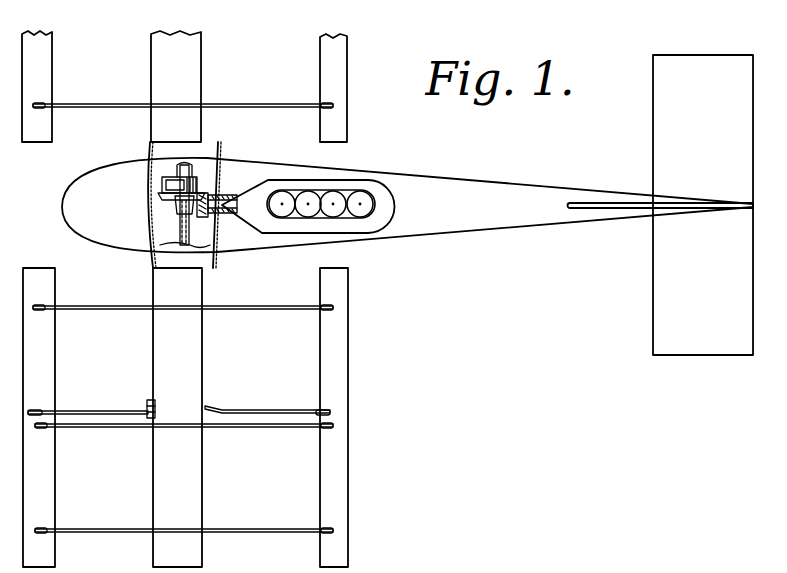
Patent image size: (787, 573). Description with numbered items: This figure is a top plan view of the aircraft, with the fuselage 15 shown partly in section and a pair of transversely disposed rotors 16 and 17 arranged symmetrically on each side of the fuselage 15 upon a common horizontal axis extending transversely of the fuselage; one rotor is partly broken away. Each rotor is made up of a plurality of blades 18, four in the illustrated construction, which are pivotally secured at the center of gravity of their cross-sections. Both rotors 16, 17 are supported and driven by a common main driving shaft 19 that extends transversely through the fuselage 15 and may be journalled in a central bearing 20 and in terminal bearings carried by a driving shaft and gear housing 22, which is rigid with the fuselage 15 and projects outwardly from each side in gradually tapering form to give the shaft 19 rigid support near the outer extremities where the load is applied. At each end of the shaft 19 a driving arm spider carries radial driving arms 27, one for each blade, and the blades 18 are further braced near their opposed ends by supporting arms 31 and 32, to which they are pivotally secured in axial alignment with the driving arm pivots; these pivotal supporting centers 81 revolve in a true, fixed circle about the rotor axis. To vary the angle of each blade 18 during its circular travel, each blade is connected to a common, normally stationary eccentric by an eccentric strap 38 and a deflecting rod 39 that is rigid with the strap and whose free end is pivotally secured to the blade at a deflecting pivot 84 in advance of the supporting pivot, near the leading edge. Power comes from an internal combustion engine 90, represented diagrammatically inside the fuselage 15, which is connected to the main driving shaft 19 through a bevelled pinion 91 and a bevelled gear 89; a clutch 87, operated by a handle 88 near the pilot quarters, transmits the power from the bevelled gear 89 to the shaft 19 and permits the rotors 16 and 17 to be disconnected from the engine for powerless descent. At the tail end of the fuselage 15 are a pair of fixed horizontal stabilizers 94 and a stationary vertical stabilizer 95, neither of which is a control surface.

The fuselage 15 is at (407, 205).
The rotor 16 is at (183, 68).
The rotor 17 is at (298, 405).
The blades 18 is at (38, 74).
The main driving shaft 19 is at (188, 163).
The central bearing 20 is at (180, 225).
The driving shaft and gear housing 22 is at (146, 170).
The radial driving arms 27 is at (107, 432).
The supporting arm 31 is at (272, 318).
The supporting arm 32 is at (115, 528).
The eccentric strap 38 is at (152, 406).
The deflecting rod 39 is at (110, 403).
The supporting centers 81 is at (33, 104).
The deflecting pivot 84 is at (32, 410).
The clutch 87 is at (160, 187).
The handle 88 is at (200, 177).
The bevelled gear 89 is at (178, 204).
The internal combustion engine 90 is at (313, 198).
The bevelled pinion 91 is at (216, 256).
The horizontal stabilizers 94 is at (703, 205).
The vertical stabilizer 95 is at (598, 200).